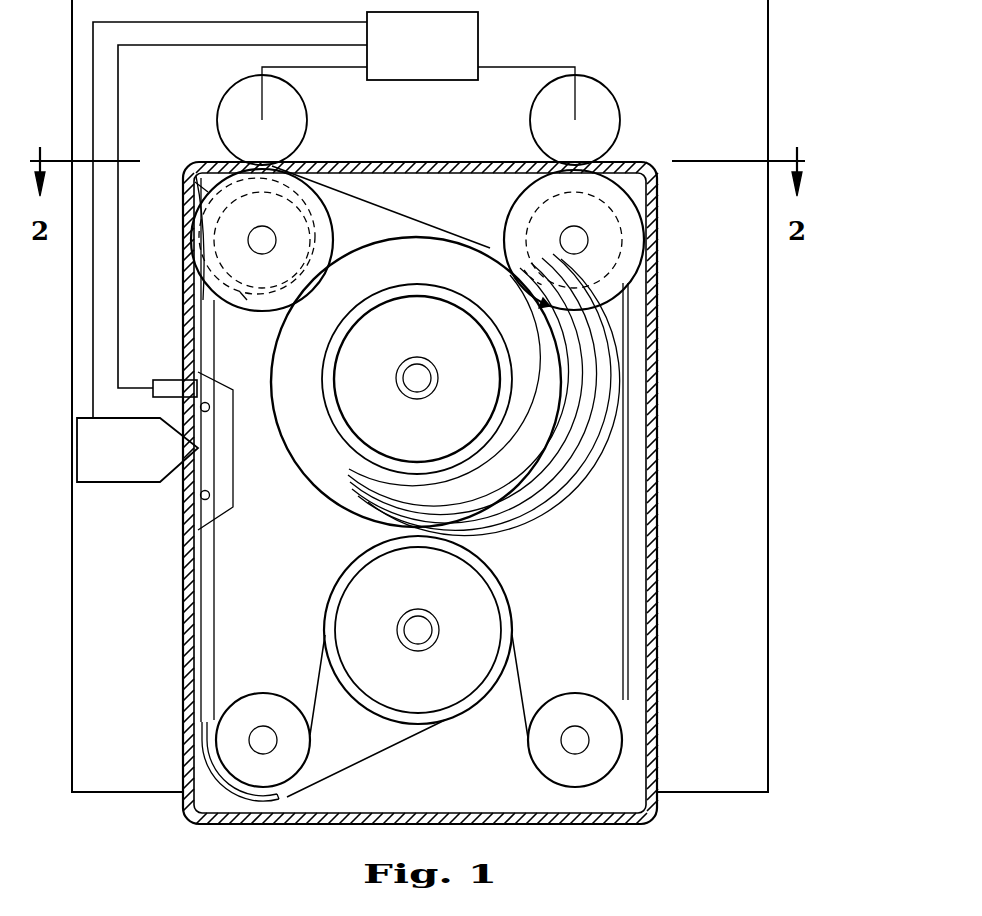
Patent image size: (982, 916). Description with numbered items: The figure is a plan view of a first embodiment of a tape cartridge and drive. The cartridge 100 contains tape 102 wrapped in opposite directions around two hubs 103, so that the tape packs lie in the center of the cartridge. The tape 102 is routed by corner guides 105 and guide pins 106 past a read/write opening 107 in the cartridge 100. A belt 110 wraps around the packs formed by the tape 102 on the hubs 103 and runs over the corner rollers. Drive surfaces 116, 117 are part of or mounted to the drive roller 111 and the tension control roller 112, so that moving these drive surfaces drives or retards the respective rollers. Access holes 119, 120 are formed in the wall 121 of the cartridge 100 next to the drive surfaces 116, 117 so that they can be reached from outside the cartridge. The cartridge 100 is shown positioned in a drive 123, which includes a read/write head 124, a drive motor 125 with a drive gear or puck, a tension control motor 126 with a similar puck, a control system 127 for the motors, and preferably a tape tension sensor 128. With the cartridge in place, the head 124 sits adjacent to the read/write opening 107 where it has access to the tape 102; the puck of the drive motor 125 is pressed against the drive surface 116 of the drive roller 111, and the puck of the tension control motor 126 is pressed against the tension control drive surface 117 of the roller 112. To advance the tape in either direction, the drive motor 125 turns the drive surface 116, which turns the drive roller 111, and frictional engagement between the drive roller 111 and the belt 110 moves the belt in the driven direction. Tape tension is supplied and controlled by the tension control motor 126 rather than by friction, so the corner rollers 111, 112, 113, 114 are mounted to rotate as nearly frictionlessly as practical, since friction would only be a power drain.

The cartridge 100 is at (666, 350).
The tape 102 is at (370, 204).
The hubs 103 is at (467, 606).
The corner guides 105 is at (191, 206).
The guide pins 106 is at (263, 465).
The read/write opening 107 is at (205, 516).
The belt 110 is at (625, 495).
The drive roller 111 is at (240, 292).
The tension control roller 112 is at (656, 198).
The corner roller 113 is at (261, 772).
The corner roller 114 is at (577, 768).
The drive surface 116 is at (207, 193).
The tension control drive surface 117 is at (632, 180).
The access hole 119 is at (290, 163).
The access hole 120 is at (545, 152).
The wall 121 is at (635, 425).
The drive 123 is at (770, 432).
The read/write head 124 is at (137, 450).
The drive motor 125 is at (226, 103).
The tension control motor 126 is at (615, 96).
The control system 127 is at (285, 215).
The tape tension sensor 128 is at (173, 380).